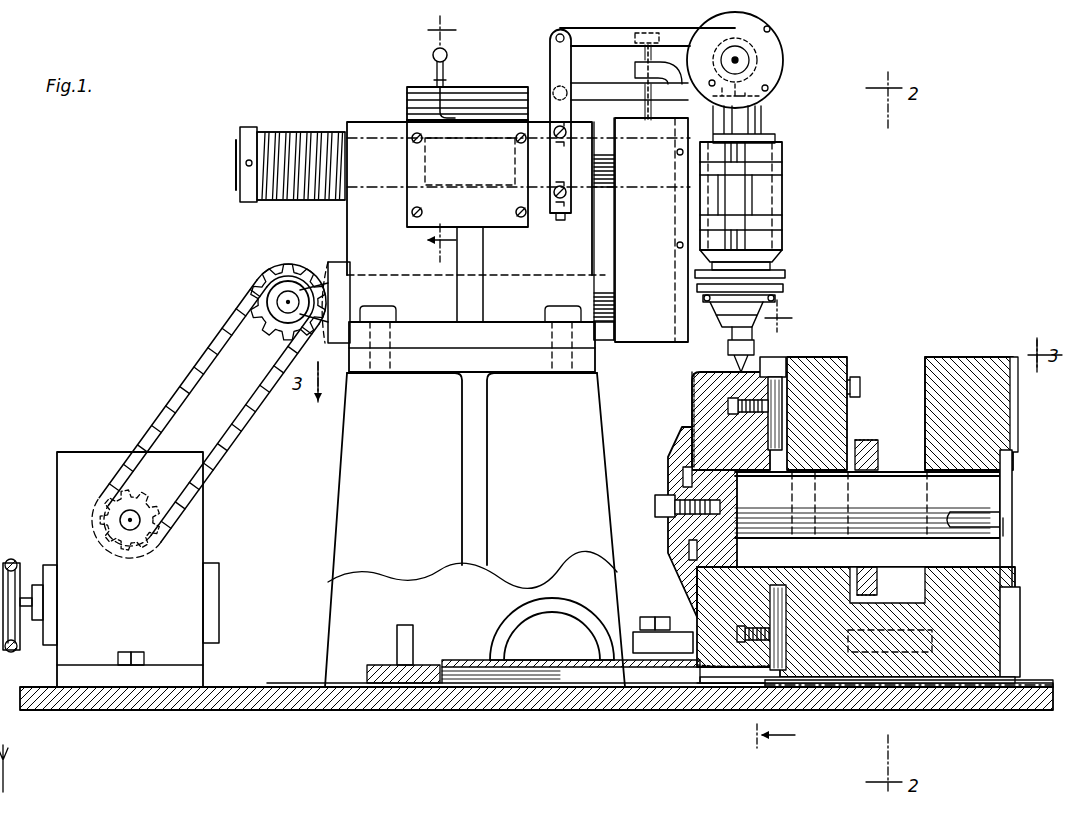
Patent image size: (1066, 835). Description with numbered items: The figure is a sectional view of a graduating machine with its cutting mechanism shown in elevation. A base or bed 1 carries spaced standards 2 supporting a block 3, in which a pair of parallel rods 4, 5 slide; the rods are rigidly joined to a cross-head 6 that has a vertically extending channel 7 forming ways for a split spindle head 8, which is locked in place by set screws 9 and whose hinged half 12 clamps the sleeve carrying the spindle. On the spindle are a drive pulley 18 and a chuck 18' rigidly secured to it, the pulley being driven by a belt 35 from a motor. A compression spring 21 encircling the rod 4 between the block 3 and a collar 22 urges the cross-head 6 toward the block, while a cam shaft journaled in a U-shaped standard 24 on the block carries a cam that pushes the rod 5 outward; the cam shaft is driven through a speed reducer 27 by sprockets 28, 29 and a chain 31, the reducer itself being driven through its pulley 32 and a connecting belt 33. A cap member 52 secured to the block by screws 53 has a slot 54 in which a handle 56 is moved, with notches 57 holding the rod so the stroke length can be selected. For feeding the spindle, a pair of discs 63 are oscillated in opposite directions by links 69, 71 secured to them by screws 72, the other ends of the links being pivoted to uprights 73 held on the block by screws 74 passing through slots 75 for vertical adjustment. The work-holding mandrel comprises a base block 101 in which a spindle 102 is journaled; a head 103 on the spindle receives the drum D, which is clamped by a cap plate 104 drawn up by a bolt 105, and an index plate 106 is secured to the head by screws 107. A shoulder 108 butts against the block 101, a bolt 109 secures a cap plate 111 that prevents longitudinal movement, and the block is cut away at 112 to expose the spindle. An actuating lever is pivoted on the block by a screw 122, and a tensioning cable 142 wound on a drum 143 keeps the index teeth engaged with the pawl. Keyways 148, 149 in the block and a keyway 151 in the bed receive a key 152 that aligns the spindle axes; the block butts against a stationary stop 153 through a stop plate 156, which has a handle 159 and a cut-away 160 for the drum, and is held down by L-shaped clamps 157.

The base or bed 1 is at (290, 708).
The standards 2 is at (346, 478).
The block 3 is at (386, 138).
The rod 4 is at (240, 162).
The rod 5 is at (607, 334).
The cross-head 6 is at (646, 342).
The vertically extending channel 7 is at (780, 524).
The split spindle head 8 is at (786, 189).
The set screws 9 is at (676, 245).
The hinged half of spindle head 12 is at (783, 153).
The drive pulley 18 is at (761, 276).
The chuck 18' is at (726, 337).
The compression spring 21 is at (312, 132).
The collar 22 is at (252, 203).
The U-shaped standard 24 is at (324, 272).
The speed reducer 27 is at (208, 556).
The sprocket 28 is at (280, 335).
The sprocket 29 is at (200, 513).
The chain 31 is at (186, 383).
The pulley on speed reducer 32 is at (16, 581).
The connecting belt 33 is at (16, 560).
The belt 35 is at (780, 298).
The cap member 52 is at (488, 223).
The screws 53 is at (412, 142).
The slot 54 is at (420, 95).
The handle 56 is at (448, 55).
The notches 57 is at (450, 120).
The discs 63 is at (770, 52).
The link 69 is at (640, 44).
The link 71 is at (614, 100).
The screws 72 is at (720, 40).
The uprights 73 is at (572, 62).
The screws 74 is at (566, 129).
The slots 75 is at (559, 216).
The base block 101 is at (953, 362).
The spindle 102 is at (896, 492).
The head 103 is at (700, 399).
The cap plate 104 is at (676, 486).
The bolt 105 is at (670, 526).
The index plate 106 is at (784, 362).
The screws 107 is at (772, 405).
The shoulder 108 is at (793, 470).
The bolt 109 is at (1012, 530).
The cap plate 111 is at (1006, 493).
The cut-away 112 is at (933, 372).
The screw 122 is at (862, 389).
The tensioning cable 142 is at (870, 600).
The drum 143 is at (878, 453).
The keyway 148 is at (1014, 682).
The keyway 149 is at (1036, 606).
The keyway 151 is at (530, 688).
The key 152 is at (845, 688).
The stationary stop 153 is at (406, 690).
The stop plate 156 is at (462, 661).
The L-shaped clamps 157 is at (930, 690).
The handle 159 is at (538, 608).
The cut-away 160 is at (705, 692).
The drum D is at (690, 380).